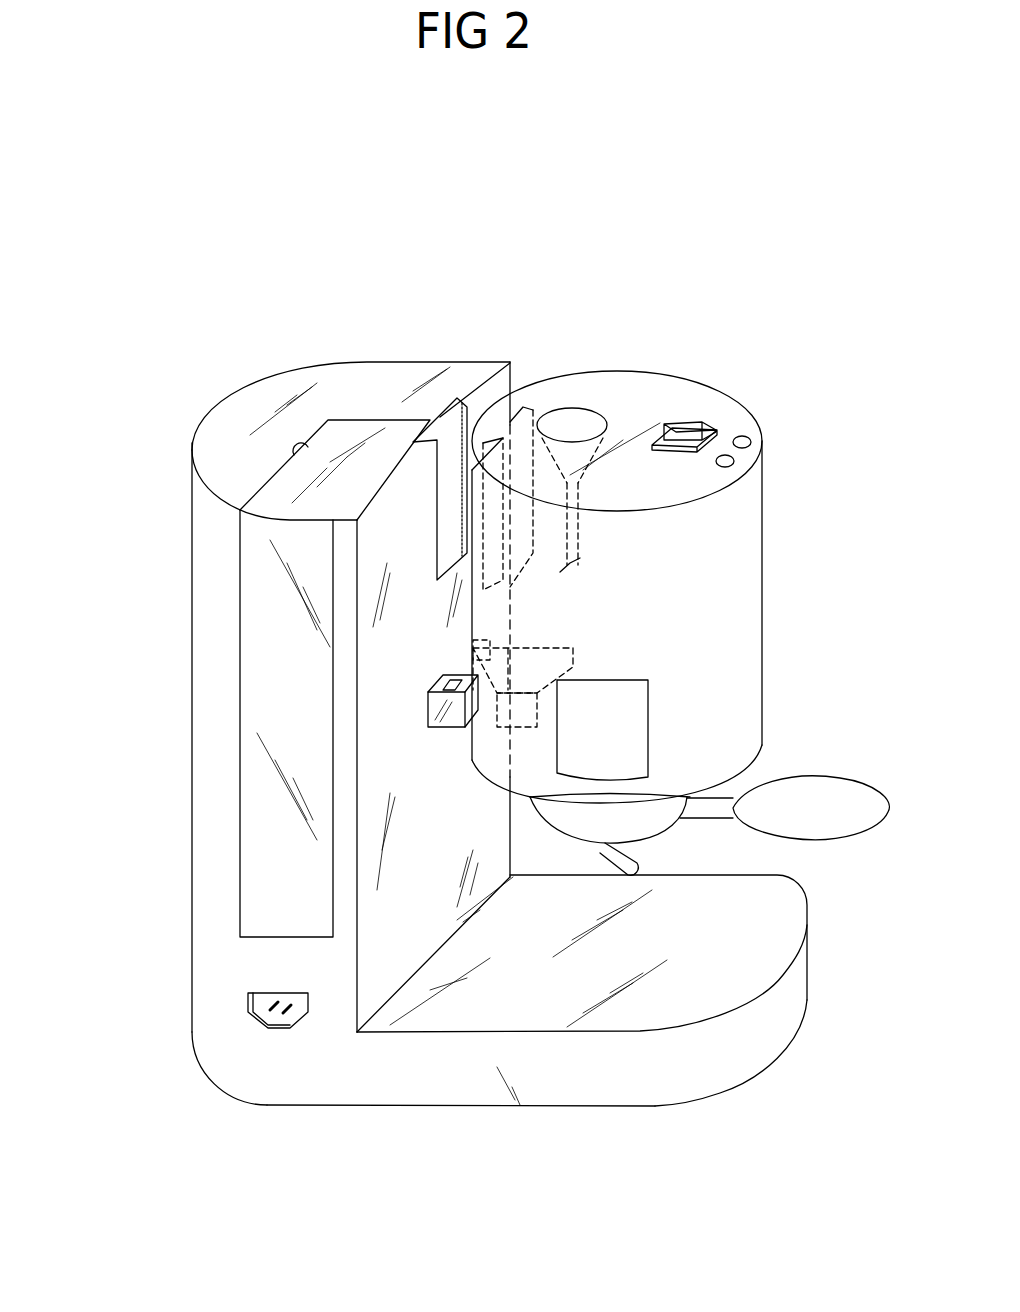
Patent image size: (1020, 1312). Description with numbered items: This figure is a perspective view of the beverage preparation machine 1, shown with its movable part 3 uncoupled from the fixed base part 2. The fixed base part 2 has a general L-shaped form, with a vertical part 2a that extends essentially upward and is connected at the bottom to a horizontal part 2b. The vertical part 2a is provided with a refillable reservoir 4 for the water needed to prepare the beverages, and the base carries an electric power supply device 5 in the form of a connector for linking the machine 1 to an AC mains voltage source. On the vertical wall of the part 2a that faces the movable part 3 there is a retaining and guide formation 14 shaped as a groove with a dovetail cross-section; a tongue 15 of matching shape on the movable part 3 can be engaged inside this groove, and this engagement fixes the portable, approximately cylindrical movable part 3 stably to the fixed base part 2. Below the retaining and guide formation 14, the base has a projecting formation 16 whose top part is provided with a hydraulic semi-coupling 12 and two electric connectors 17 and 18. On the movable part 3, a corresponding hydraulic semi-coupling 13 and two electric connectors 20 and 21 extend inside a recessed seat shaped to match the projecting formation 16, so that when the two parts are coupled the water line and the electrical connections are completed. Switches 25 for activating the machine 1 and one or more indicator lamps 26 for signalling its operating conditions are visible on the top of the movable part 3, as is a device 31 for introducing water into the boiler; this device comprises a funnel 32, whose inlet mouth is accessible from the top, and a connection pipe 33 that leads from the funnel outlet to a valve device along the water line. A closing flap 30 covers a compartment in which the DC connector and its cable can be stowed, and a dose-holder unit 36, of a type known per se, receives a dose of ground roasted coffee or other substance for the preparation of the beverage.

The machine 1 is at (288, 300).
The fixed base part 2 is at (178, 812).
The vertical part of the fixed base 2a is at (184, 709).
The horizontal part of the fixed base 2b is at (480, 1043).
The movable part 3 is at (785, 594).
The refillable reservoir 4 is at (268, 851).
The electric power supply device 5 is at (272, 1030).
The hydraulic semi-coupling 12 is at (493, 650).
The hydraulic semi-coupling 13 is at (537, 648).
The retaining and guide formation 14 is at (447, 440).
The tongue 15 is at (485, 450).
The projecting formation 16 is at (433, 672).
The electric connector 17 is at (445, 678).
The electric connector 18 is at (430, 727).
The electric connector 20 is at (486, 861).
The electric connector 21 is at (485, 727).
The switches 25 is at (693, 427).
The indicator lamps 26 is at (750, 442).
The closing flap 30 is at (592, 755).
The device for introducing water 31 is at (586, 382).
The funnel 32 is at (570, 427).
The connection pipe 33 is at (565, 570).
The dose-holder unit 36 is at (667, 848).